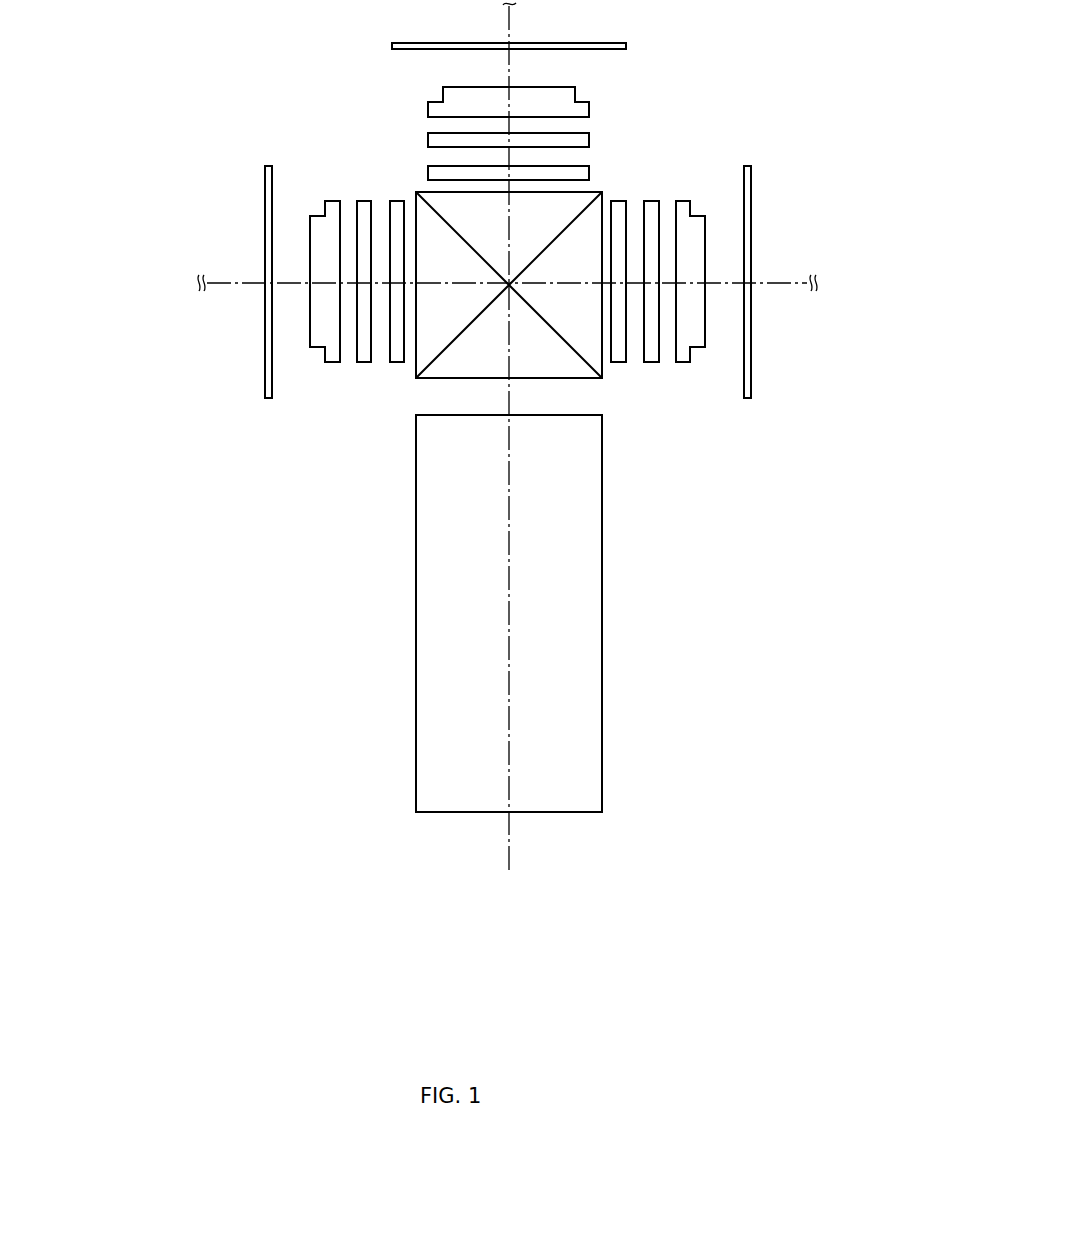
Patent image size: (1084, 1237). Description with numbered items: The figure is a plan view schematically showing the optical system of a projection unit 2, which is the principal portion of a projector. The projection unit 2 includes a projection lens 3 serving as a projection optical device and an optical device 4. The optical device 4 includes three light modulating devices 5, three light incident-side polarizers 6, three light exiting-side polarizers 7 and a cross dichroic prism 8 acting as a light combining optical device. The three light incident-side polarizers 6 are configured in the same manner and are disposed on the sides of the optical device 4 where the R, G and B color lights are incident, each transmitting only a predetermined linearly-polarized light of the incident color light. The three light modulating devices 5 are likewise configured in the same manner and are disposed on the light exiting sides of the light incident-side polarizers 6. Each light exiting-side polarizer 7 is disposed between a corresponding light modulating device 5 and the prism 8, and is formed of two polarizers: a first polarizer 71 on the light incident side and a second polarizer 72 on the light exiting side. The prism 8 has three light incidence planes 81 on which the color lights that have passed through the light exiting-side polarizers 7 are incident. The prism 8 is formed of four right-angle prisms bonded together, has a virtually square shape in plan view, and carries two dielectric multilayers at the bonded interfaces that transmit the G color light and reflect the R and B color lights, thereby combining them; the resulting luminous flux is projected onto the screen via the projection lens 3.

The projection unit 2 is at (284, 711).
The projection lens 3 is at (584, 605).
The optical device 4 is at (705, 110).
The light modulating device 5 is at (568, 90).
The light incident-side polarizer 6 is at (626, 46).
The light exiting-side polarizer 7 is at (660, 132).
The cross dichroic prism 8 is at (417, 200).
The first polarizer 71 is at (578, 138).
The second polarizer 72 is at (578, 172).
The light incidence plane 81 is at (416, 193).